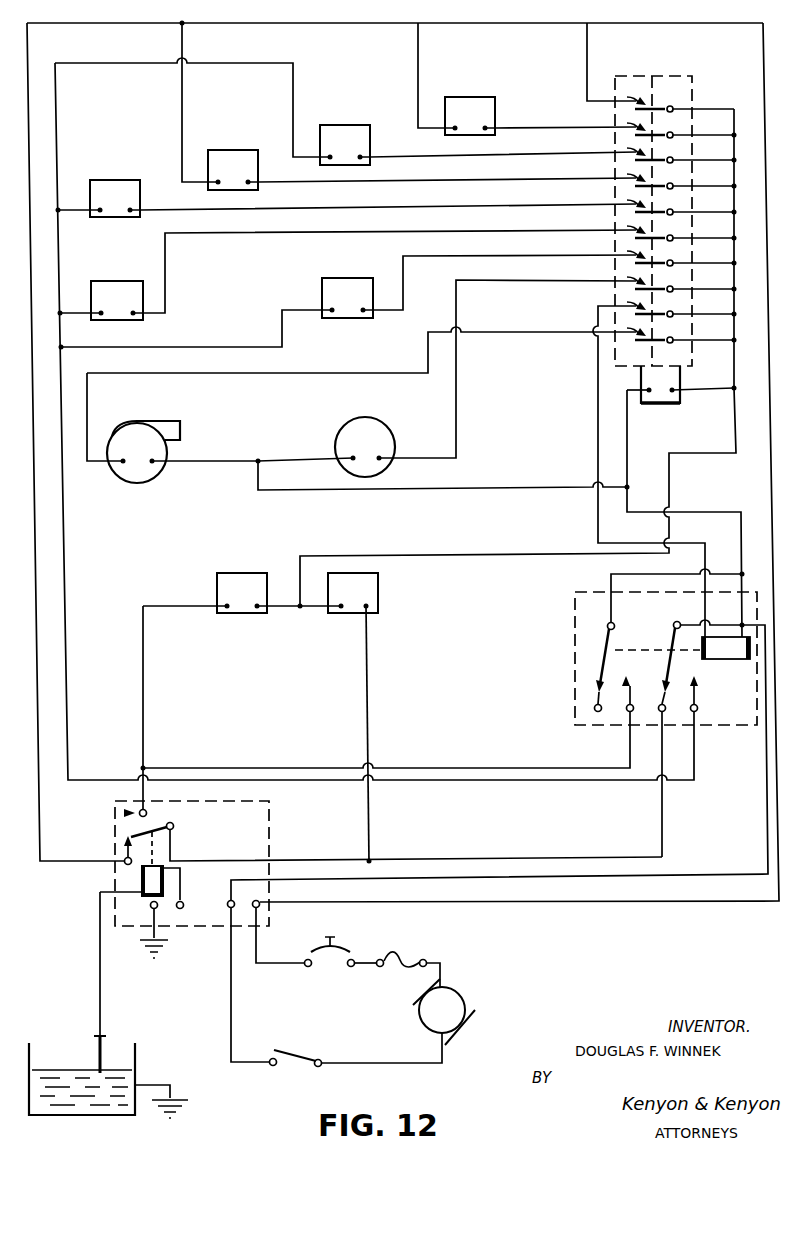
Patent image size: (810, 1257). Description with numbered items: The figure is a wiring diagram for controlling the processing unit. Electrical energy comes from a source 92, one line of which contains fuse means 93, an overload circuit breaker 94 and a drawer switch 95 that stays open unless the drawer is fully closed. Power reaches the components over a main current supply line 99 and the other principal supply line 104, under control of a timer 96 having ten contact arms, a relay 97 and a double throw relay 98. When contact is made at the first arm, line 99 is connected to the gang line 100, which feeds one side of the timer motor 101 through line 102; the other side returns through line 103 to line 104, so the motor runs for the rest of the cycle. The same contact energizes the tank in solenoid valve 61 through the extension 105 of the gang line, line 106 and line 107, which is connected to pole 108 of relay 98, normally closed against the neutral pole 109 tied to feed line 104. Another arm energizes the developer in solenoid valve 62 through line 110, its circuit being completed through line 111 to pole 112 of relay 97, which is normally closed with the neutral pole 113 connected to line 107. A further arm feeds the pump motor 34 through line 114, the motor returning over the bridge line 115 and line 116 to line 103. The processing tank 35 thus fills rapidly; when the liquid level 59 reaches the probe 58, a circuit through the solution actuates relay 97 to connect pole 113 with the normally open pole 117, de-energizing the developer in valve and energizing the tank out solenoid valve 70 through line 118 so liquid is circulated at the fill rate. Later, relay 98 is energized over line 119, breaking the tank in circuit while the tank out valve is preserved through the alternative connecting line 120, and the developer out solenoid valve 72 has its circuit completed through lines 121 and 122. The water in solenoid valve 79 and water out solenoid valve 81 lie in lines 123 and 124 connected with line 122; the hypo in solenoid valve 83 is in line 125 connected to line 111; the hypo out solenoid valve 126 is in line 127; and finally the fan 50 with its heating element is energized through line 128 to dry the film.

The line 111 is at (29, 308).
The main current supply line 99 is at (646, 900).
The line 125 is at (184, 90).
The line 122 is at (498, 781).
The hypo out solenoid valve 126 is at (141, 193).
The line 127 is at (175, 212).
The hypo in solenoid valve 83 is at (259, 157).
The developer out solenoid valve 72 is at (371, 137).
The line 121 is at (446, 155).
The developer in solenoid valve 62 is at (493, 106).
The line 110 is at (538, 127).
The water in solenoid valve 79 is at (138, 280).
The line 123 is at (226, 236).
The water out solenoid valve 81 is at (324, 287).
The line 124 is at (478, 256).
The line 114 is at (475, 283).
The line 128 is at (295, 376).
The fan 50 is at (181, 437).
The bridge line 115 is at (257, 458).
The pump motor 34 is at (354, 426).
The line 116 is at (492, 489).
The timer 96 is at (688, 71).
The gang line 100 is at (735, 358).
The timer motor 101 is at (670, 404).
The line 102 is at (727, 392).
The extension of the gang line 105 is at (575, 554).
The line 103 is at (695, 510).
The line 119 is at (597, 450).
The tank out solenoid valve 70 is at (243, 578).
The tank in solenoid valve 61 is at (352, 612).
The line 118 is at (147, 708).
The line 106 is at (371, 727).
The double throw relay 98 is at (577, 605).
The neutral pole 109 is at (735, 624).
The principal current supply line 104 is at (686, 873).
The alternative connecting line 120 is at (441, 766).
The pole 108 is at (659, 716).
The line 107 is at (524, 858).
The relay 97 is at (270, 833).
The normally open pole 117 is at (122, 809).
The neutral pole 113 is at (173, 831).
The pole 112 is at (124, 866).
The drawer switch 95 is at (295, 1052).
The overload circuit breaker 94 is at (342, 948).
The fuse means 93 is at (398, 960).
The source of electrical energy 92 is at (458, 995).
The probe 58 is at (106, 1036).
The processing tank 35 is at (137, 1050).
The liquid level 59 is at (84, 1069).